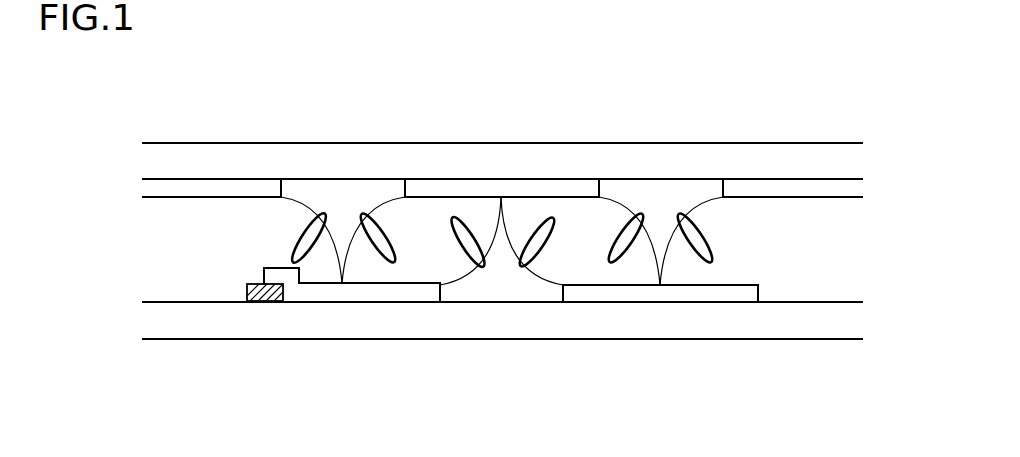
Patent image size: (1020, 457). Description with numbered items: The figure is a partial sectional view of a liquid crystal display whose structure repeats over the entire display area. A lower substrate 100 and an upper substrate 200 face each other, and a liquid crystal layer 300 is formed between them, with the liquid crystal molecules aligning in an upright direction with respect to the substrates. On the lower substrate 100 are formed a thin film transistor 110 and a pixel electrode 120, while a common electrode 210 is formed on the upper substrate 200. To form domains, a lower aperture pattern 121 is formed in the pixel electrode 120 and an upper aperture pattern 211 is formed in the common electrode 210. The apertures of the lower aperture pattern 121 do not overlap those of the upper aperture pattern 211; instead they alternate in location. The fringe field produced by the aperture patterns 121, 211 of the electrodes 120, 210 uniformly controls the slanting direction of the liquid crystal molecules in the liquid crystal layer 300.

The lower substrate 100 is at (368, 320).
The thin film transistor 110 is at (262, 302).
The pixel electrode 120 is at (633, 297).
The lower aperture pattern 121 is at (503, 314).
The upper substrate 200 is at (397, 152).
The common electrode 210 is at (500, 190).
The upper aperture pattern 211 is at (347, 168).
The liquid crystal layer 300 is at (148, 247).